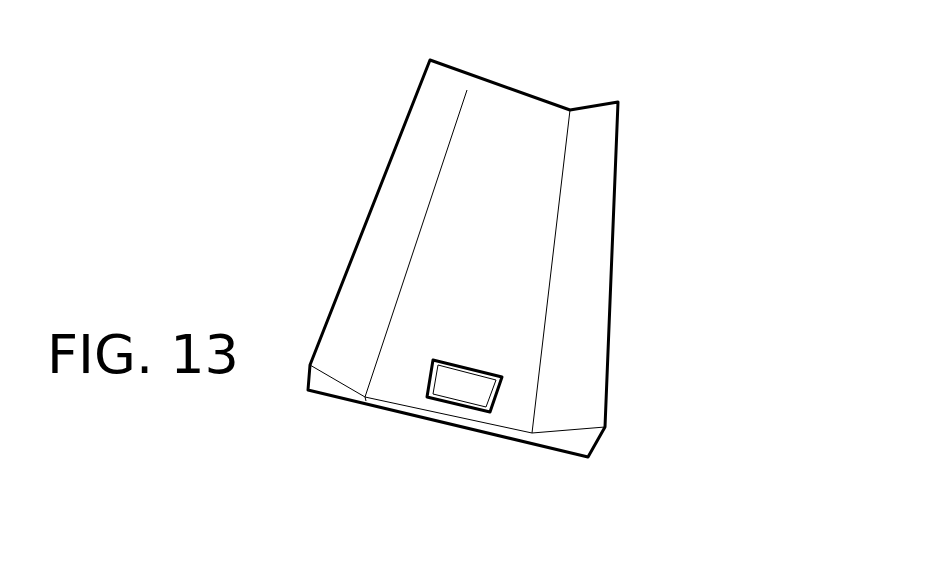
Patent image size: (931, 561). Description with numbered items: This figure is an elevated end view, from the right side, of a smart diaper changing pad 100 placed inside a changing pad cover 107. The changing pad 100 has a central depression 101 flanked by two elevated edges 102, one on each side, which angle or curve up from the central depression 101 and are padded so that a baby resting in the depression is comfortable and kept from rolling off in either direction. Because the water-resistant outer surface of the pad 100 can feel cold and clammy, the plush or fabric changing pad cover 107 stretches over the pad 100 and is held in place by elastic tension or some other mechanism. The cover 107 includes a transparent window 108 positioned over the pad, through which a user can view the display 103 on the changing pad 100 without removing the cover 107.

The smart diaper changing pad 100 is at (531, 459).
The central depression 101 is at (490, 180).
The elevated edges 102 is at (378, 240).
The display 103 is at (480, 393).
The changing pad cover 107 is at (483, 235).
The transparent window 108 is at (429, 378).